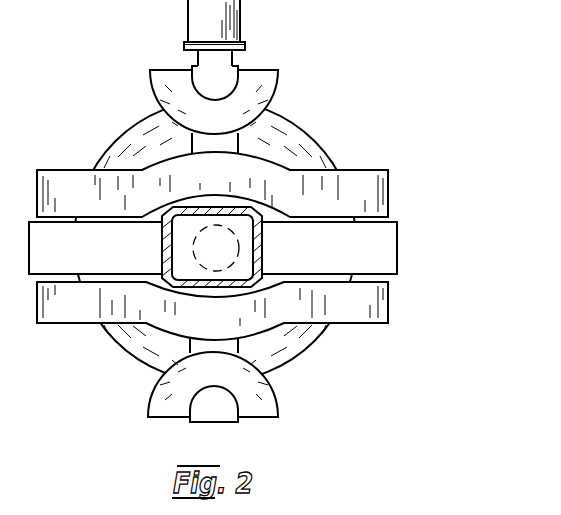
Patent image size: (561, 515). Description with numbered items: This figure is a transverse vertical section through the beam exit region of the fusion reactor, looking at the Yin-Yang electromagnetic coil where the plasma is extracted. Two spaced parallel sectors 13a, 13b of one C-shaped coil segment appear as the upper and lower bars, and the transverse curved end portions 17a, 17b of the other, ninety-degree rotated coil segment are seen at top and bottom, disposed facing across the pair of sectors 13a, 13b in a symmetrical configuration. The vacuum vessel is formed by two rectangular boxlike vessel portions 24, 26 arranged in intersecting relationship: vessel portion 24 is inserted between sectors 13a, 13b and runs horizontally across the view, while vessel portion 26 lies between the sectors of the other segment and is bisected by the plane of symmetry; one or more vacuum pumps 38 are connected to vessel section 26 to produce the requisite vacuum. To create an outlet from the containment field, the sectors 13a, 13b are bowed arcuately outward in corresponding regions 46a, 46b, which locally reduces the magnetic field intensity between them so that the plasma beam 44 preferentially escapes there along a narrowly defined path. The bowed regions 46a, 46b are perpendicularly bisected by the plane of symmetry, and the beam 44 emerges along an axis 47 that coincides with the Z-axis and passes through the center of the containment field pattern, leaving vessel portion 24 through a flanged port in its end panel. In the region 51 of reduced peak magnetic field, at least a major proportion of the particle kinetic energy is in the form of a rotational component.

The sector 13a is at (57, 201).
The sector 13b is at (62, 311).
The transverse curved end portion 17a is at (202, 126).
The transverse curved end portion 17b is at (201, 377).
The rectangular boxlike vessel portion 24 is at (333, 254).
The rectangular boxlike vessel portion 26 is at (229, 89).
The vacuum pump 38 is at (241, 21).
The plasma beam 44 is at (190, 258).
The bowed region 46a is at (200, 181).
The bowed region 46b is at (200, 329).
The axis 47 is at (214, 250).
The region of reduced peak magnetic field 51 is at (250, 246).